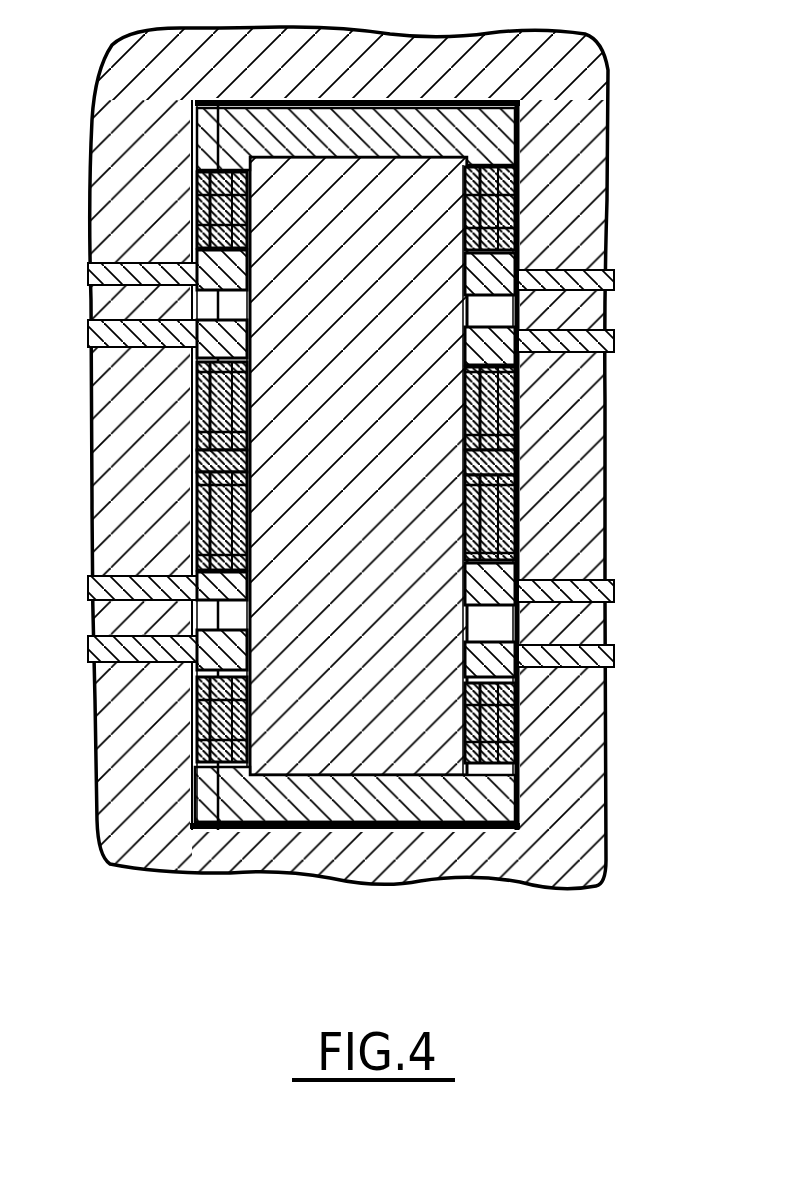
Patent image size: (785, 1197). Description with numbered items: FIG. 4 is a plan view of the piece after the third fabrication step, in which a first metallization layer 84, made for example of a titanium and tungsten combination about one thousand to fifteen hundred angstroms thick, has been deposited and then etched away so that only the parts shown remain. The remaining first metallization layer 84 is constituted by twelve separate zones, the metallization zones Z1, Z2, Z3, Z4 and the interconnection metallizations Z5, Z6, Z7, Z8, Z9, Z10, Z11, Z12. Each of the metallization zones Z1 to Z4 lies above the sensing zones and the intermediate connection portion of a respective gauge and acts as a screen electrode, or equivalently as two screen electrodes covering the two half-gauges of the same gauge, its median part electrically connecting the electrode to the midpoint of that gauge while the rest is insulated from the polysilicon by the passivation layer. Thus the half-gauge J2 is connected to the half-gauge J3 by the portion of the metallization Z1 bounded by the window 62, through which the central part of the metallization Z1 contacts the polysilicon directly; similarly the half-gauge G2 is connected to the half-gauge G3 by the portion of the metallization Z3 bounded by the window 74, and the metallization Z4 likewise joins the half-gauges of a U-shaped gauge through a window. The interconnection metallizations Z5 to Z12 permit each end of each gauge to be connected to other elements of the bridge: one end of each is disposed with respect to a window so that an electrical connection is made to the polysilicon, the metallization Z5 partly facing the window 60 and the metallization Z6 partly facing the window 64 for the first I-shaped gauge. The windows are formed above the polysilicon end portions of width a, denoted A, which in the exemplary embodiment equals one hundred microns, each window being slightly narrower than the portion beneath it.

The metallization zone Z1 is at (190, 521).
The metallization zone Z2 is at (403, 830).
The metallization zone Z3 is at (547, 465).
The metallization zone Z4 is at (493, 135).
The interconnection metallization Z5 is at (97, 327).
The interconnection metallization Z6 is at (97, 583).
The interconnection metallization Z7 is at (95, 652).
The interconnection metallization Z8 is at (608, 668).
The interconnection metallization Z9 is at (605, 592).
The interconnection metallization Z10 is at (612, 350).
The interconnection metallization Z11 is at (614, 285).
The interconnection metallization Z12 is at (140, 262).
The width a A is at (222, 204).
The window 60 is at (253, 330).
The window 62 is at (200, 468).
The window 64 is at (240, 580).
The window 74 is at (468, 457).
The first metallization layer 84 is at (292, 805).
The half-gauge J2 is at (260, 392).
The half-gauge J3 is at (243, 507).
The half-gauge G2 is at (468, 417).
The half-gauge G3 is at (473, 513).